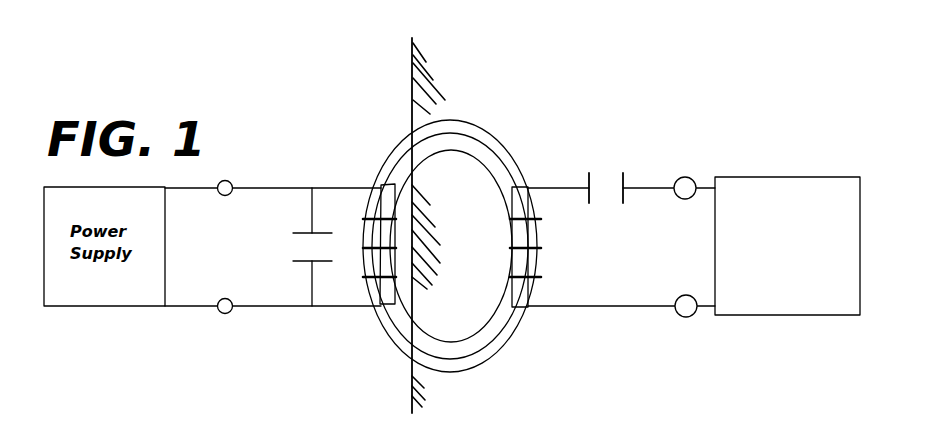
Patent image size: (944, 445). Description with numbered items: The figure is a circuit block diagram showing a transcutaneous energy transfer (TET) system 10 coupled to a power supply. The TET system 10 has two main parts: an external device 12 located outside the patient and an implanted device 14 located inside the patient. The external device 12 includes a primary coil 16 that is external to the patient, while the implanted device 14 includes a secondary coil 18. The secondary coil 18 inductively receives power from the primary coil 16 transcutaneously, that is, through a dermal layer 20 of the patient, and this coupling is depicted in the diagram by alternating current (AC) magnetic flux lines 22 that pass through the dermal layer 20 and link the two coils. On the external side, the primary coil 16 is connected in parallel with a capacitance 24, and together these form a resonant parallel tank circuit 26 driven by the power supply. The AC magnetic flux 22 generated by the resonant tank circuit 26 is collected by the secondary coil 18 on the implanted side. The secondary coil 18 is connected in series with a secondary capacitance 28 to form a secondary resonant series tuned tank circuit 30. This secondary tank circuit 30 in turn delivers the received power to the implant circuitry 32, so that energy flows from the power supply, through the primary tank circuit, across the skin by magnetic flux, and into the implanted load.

The transcutaneous energy transfer (TET) system 10 is at (611, 51).
The external device 12 is at (279, 97).
The implanted device 14 is at (594, 92).
The primary coil 16 is at (387, 186).
The secondary coil 18 is at (528, 281).
The dermal layer 20 is at (410, 82).
The alternating current (AC) magnetic flux lines 22 is at (468, 359).
The capacitance 24 is at (294, 247).
The resonant parallel tank circuit 26 is at (298, 311).
The secondary capacitance 28 is at (601, 180).
The secondary resonant series tuned tank circuit 30 is at (575, 247).
The implant circuitry 32 is at (781, 320).